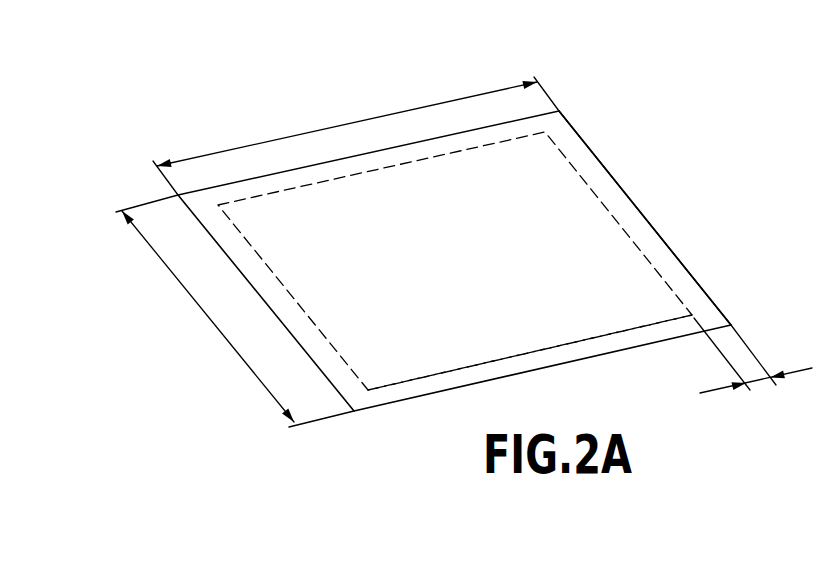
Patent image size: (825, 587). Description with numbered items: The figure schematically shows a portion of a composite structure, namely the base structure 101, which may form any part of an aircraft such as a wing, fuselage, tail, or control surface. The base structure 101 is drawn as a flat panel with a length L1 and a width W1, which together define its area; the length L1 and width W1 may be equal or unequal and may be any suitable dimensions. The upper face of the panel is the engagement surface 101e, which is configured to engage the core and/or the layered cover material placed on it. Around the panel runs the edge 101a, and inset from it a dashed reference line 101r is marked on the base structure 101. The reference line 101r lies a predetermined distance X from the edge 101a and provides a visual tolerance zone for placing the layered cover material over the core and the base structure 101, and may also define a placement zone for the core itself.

The base structure 101 is at (567, 52).
The reference line 101r is at (572, 165).
The edge 101a is at (667, 248).
The engagement surface 101e is at (397, 377).
The length L1 is at (368, 120).
The width W1 is at (208, 318).
The predetermined distance X is at (759, 381).